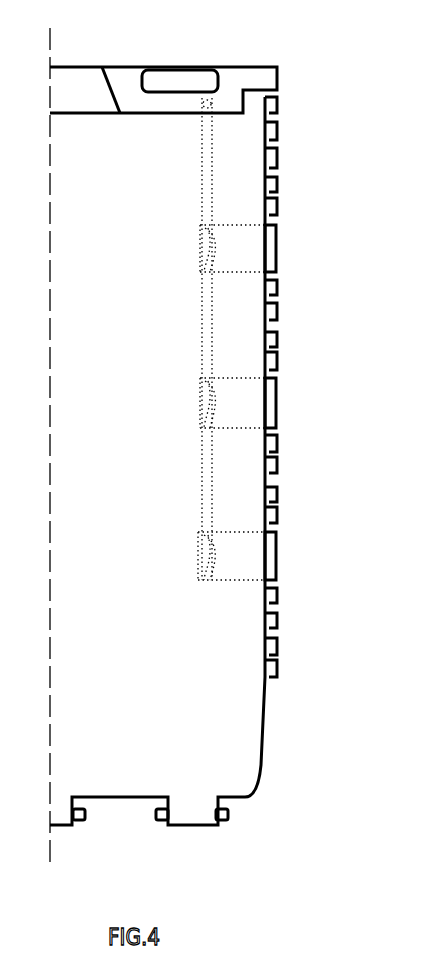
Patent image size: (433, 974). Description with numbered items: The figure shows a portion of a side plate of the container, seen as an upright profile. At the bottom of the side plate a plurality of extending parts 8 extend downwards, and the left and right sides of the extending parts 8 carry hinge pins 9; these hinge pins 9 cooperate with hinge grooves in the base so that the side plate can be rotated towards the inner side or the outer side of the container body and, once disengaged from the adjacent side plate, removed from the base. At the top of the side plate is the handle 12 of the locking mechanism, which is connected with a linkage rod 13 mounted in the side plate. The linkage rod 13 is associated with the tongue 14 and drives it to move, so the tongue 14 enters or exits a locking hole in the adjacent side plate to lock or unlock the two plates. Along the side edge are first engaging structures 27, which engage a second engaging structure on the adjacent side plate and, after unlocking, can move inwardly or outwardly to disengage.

The extending part 8 is at (208, 828).
The hinge pin 9 is at (230, 815).
The handle 12 is at (245, 77).
The linkage rod 13 is at (208, 472).
The tongue 14 is at (253, 247).
The first engaging structure 27 is at (277, 148).